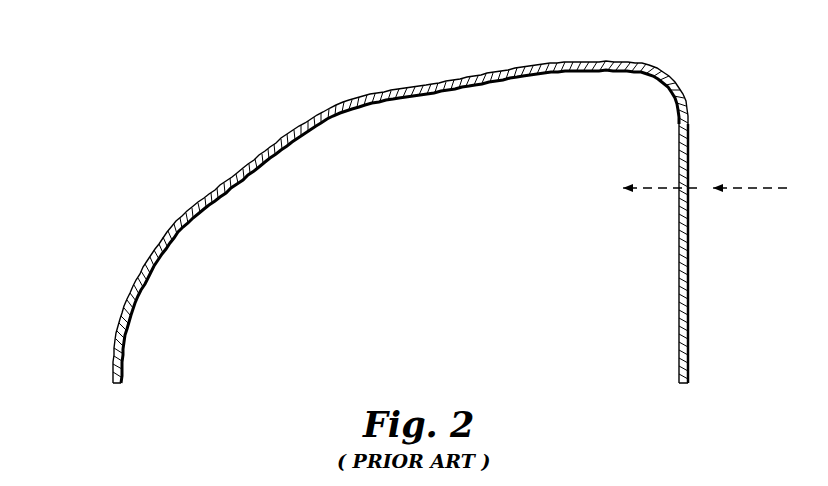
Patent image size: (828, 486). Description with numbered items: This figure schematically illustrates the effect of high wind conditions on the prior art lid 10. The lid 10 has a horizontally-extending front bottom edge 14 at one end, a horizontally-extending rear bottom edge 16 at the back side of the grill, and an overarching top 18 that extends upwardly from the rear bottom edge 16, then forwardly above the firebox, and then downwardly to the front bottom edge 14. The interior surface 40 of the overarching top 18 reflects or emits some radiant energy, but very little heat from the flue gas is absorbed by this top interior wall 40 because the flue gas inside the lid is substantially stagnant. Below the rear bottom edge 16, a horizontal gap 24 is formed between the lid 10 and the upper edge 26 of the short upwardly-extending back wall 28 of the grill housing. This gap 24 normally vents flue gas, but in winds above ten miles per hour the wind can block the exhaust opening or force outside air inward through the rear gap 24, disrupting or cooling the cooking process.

The prior art lid 10 is at (408, 216).
The front bottom edge 14 is at (112, 384).
The rear bottom edge 16 is at (678, 169).
The overarching top 18 is at (477, 71).
The horizontal gap 24 is at (688, 179).
The upper edge of back wall 26 is at (678, 204).
The back wall 28 is at (689, 300).
The interior surface of overarching top 40 is at (243, 181).